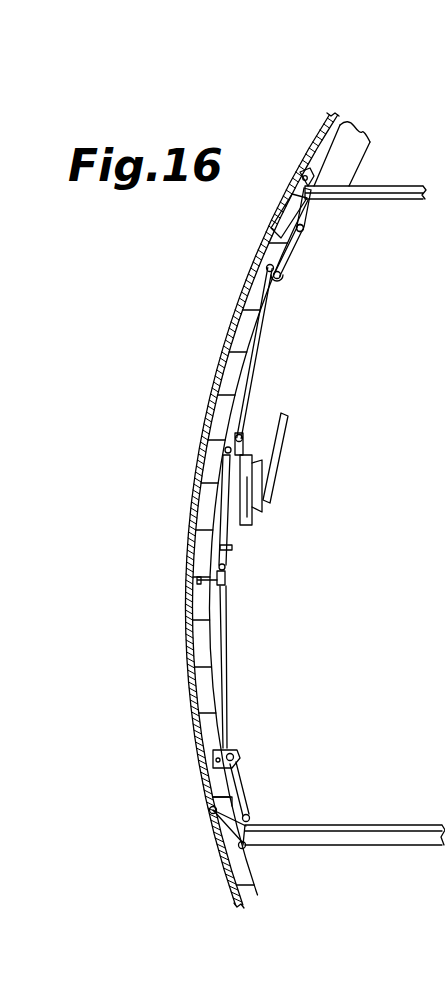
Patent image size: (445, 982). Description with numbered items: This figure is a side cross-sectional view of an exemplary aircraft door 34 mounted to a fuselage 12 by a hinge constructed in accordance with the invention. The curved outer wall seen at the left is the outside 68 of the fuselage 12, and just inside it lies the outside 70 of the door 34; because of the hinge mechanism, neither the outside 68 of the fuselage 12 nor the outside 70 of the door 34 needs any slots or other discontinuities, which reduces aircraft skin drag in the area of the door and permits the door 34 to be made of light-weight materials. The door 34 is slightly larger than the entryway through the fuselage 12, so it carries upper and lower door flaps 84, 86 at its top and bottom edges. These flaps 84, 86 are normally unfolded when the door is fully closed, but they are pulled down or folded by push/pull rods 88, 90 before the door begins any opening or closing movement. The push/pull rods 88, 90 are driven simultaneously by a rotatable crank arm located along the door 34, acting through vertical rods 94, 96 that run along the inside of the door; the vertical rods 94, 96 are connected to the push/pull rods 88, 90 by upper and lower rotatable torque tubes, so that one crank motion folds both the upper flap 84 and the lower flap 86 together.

The fuselage 12 is at (348, 161).
The door 34 is at (222, 414).
The outside of the fuselage 68 is at (306, 172).
The outside of the door 70 is at (199, 466).
The upper door flap 84 is at (297, 210).
The lower door flap 86 is at (236, 829).
The push/pull rod 88 is at (292, 257).
The push/pull rod 90 is at (242, 791).
The vertical rod 94 is at (259, 358).
The vertical rod 96 is at (226, 637).